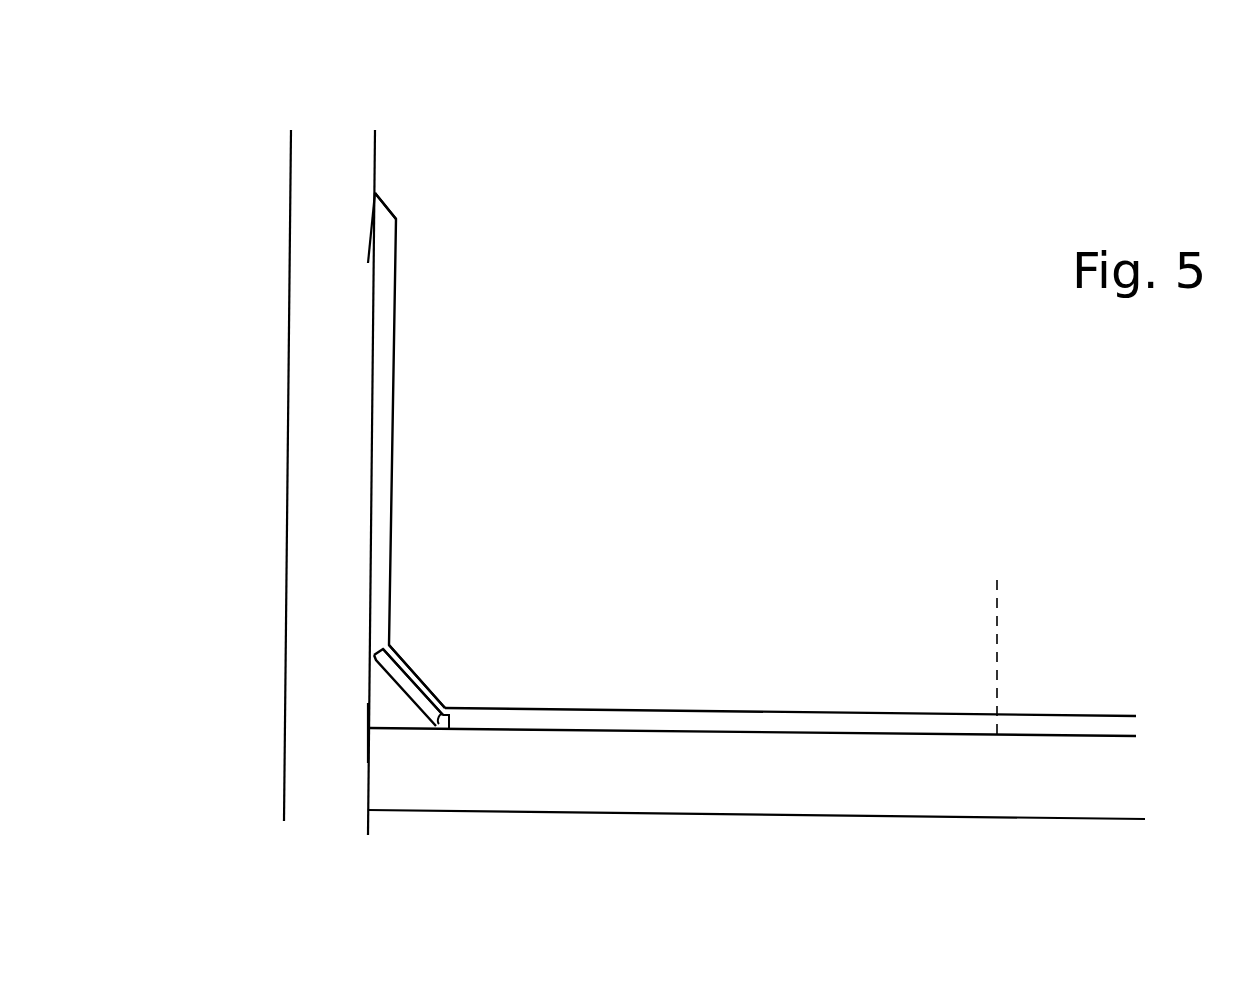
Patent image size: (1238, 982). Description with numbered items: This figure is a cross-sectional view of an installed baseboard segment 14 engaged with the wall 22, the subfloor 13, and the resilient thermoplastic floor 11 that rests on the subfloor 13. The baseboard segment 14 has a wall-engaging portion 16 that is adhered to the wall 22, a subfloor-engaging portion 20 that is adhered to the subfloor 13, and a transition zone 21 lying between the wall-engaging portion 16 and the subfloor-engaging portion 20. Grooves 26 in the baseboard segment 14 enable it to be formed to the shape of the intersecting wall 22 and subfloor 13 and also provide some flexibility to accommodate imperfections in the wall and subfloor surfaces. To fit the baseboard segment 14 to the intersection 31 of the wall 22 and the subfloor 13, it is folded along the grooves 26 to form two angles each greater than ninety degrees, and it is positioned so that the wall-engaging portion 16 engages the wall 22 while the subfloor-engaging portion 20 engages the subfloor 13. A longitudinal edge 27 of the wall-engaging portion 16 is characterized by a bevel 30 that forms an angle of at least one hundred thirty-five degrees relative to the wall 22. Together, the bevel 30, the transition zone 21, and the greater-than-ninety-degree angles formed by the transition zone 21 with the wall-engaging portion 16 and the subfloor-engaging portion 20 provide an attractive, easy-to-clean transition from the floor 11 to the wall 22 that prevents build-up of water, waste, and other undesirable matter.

The floor 11 is at (1073, 722).
The subfloor 13 is at (1010, 792).
The baseboard segment 14 is at (387, 457).
The wall-engaging portion 16 is at (383, 622).
The subfloor-engaging portion 20 is at (650, 715).
The transition zone 21 is at (423, 690).
The wall 22 is at (373, 162).
The grooves 26 is at (427, 718).
The longitudinal edge 27 is at (373, 190).
The bevel 30 is at (392, 210).
The intersection 31 is at (366, 725).